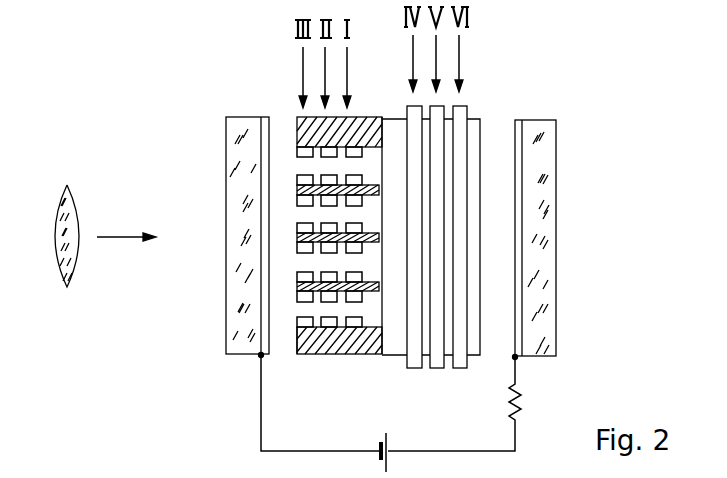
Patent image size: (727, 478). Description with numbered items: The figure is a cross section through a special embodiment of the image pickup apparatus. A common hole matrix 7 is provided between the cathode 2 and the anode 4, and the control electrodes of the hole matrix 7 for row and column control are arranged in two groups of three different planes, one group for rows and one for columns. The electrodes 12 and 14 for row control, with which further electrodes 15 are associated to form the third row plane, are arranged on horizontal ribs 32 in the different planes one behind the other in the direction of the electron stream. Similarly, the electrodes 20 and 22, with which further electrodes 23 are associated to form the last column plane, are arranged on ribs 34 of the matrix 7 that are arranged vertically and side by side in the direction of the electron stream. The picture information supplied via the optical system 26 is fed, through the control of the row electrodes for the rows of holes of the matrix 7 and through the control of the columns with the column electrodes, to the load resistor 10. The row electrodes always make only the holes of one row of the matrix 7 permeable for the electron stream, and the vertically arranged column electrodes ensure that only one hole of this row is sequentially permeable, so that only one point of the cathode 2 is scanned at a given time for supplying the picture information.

The cathode 2 is at (267, 118).
The anode 4 is at (519, 123).
The hole matrix 7 is at (331, 235).
The load resistor 10 is at (523, 398).
The electrode for row control 12 is at (350, 324).
The electrode for row control 14 is at (319, 348).
The further electrodes 15 is at (303, 355).
The electrode for column control 20 is at (415, 363).
The electrode for column control 22 is at (436, 363).
The further electrodes 23 is at (461, 363).
The optical system 26 is at (73, 265).
The horizontal ribs 32 is at (299, 190).
The ribs 34 is at (485, 126).